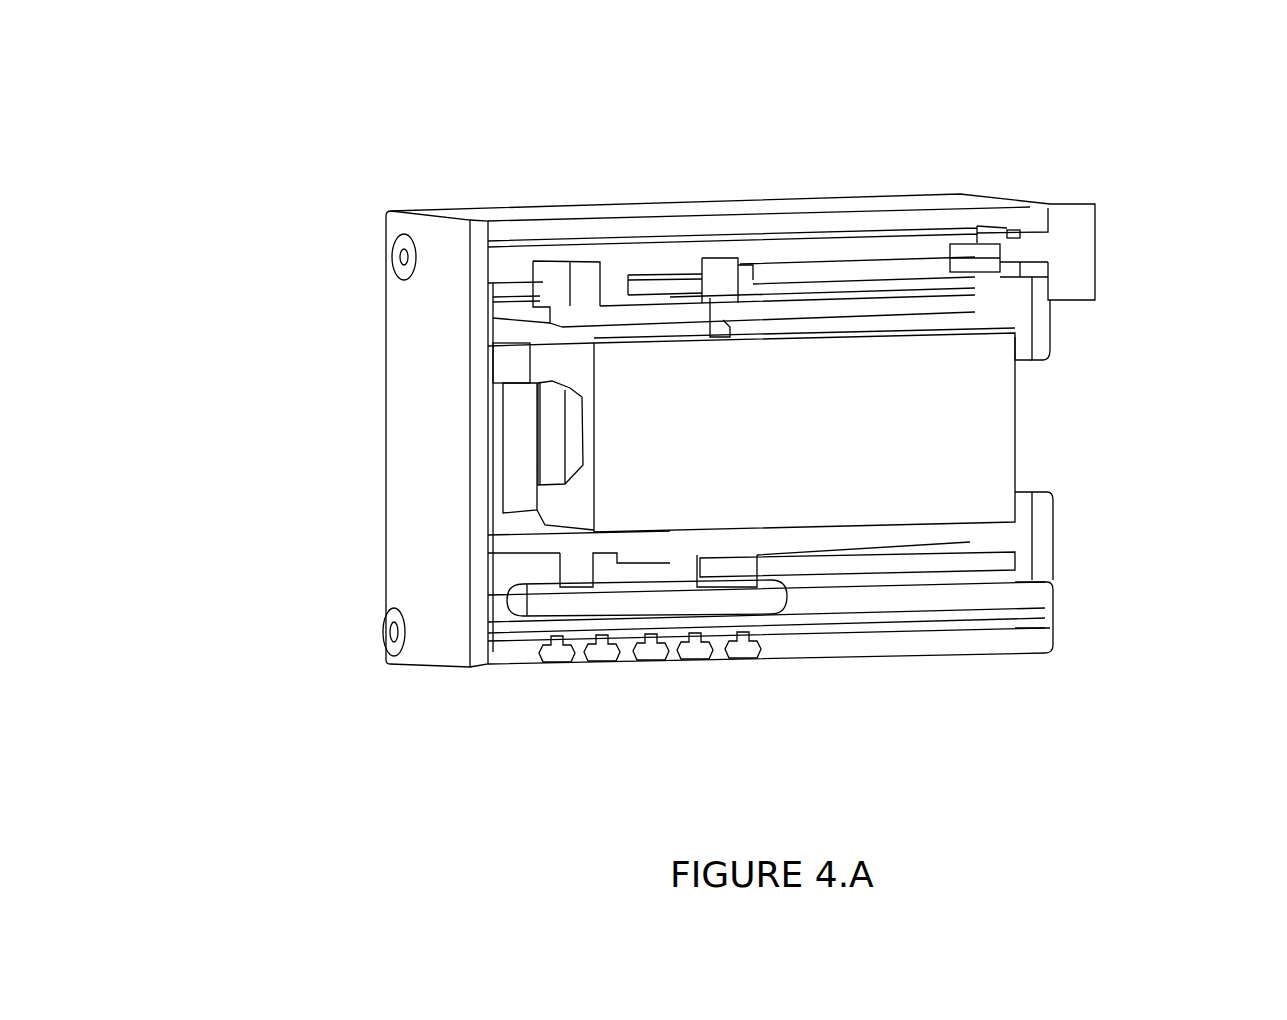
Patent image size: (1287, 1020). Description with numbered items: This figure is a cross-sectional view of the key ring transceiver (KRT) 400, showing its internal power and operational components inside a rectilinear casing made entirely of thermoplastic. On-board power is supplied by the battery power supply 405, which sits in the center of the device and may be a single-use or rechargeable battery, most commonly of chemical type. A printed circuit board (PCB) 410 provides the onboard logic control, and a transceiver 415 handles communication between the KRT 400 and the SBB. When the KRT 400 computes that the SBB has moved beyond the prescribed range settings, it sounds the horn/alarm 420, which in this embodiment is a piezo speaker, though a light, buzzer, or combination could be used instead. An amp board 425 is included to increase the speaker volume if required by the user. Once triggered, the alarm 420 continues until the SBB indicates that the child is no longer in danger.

The key ring transceiver (KRT) 400 is at (318, 207).
The battery power supply 405 is at (990, 455).
The printed circuit board (PCB) 410 is at (873, 278).
The transceiver 415 is at (581, 277).
The horn/alarm 420 is at (625, 608).
The amp board 425 is at (888, 565).